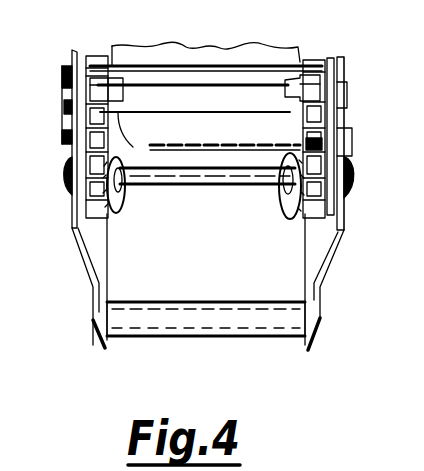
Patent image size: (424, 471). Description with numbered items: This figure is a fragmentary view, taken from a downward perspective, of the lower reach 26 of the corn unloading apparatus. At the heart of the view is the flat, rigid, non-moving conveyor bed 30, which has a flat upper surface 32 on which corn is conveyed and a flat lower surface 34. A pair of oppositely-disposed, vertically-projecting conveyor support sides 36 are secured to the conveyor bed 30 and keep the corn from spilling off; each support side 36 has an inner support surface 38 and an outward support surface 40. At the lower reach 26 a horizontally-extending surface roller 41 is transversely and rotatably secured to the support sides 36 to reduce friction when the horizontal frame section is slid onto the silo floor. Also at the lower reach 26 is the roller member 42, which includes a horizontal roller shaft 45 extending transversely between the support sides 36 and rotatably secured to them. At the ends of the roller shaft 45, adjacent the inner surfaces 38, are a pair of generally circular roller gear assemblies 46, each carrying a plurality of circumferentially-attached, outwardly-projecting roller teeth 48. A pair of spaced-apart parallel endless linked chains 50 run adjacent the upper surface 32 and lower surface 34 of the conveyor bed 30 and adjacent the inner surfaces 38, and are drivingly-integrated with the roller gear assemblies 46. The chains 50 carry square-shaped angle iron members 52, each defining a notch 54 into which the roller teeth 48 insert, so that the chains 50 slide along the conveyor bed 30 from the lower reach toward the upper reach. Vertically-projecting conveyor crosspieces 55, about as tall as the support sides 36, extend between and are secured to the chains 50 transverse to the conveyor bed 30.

The lower reach 26 is at (342, 268).
The conveyor bed 30 is at (135, 46).
The upper surface 32 is at (183, 50).
The lower surface 34 is at (56, 118).
The conveyor support sides 36 is at (72, 224).
The inner support surface 38 is at (92, 247).
The outward support surface 40 is at (72, 211).
The surface roller 41 is at (199, 333).
The roller member 42 is at (200, 188).
The roller shaft 45 is at (216, 194).
The roller gear assemblies 46 is at (120, 190).
The roller teeth 48 is at (305, 145).
The endless linked chains 50 is at (98, 93).
The angle iron members 52 is at (318, 117).
The notch 54 is at (78, 49).
The conveyor crosspieces 55 is at (219, 67).